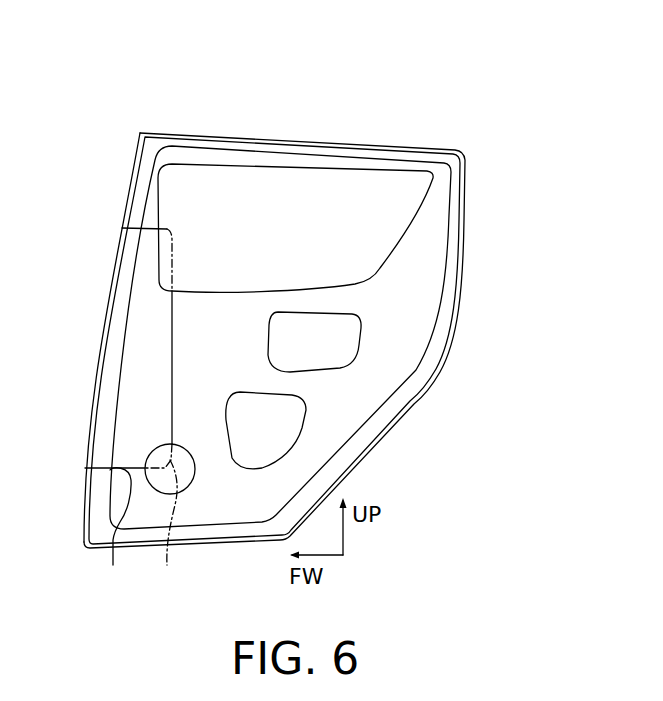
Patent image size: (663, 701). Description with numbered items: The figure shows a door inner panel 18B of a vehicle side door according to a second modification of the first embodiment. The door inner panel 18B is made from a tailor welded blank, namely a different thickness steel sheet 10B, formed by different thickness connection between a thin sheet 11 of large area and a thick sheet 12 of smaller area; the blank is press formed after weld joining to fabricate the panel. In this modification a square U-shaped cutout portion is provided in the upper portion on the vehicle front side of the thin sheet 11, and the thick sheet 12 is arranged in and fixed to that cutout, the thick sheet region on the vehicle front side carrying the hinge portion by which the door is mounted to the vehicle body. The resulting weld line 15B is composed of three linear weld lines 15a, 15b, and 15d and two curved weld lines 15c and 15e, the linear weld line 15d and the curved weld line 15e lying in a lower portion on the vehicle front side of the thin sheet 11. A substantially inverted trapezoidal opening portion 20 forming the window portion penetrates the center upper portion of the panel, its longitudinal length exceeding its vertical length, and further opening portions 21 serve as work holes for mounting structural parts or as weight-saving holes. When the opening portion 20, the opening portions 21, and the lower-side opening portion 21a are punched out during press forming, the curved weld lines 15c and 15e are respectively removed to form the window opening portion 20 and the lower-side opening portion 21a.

The door inner panel 18B is at (425, 123).
The different thickness steel sheet 10B is at (468, 202).
The thin sheet 11 is at (441, 300).
The thick sheet 12 is at (104, 400).
The opening portion 20 is at (303, 245).
The weld line 15B is at (159, 391).
The linear weld line 15a is at (135, 228).
The linear weld line 15b is at (173, 365).
The curved weld line 15c is at (173, 233).
The linear weld line 15d is at (115, 530).
The curved weld line 15e is at (172, 526).
The opening portions 21 is at (328, 371).
The lower-side opening portion 21a is at (260, 511).